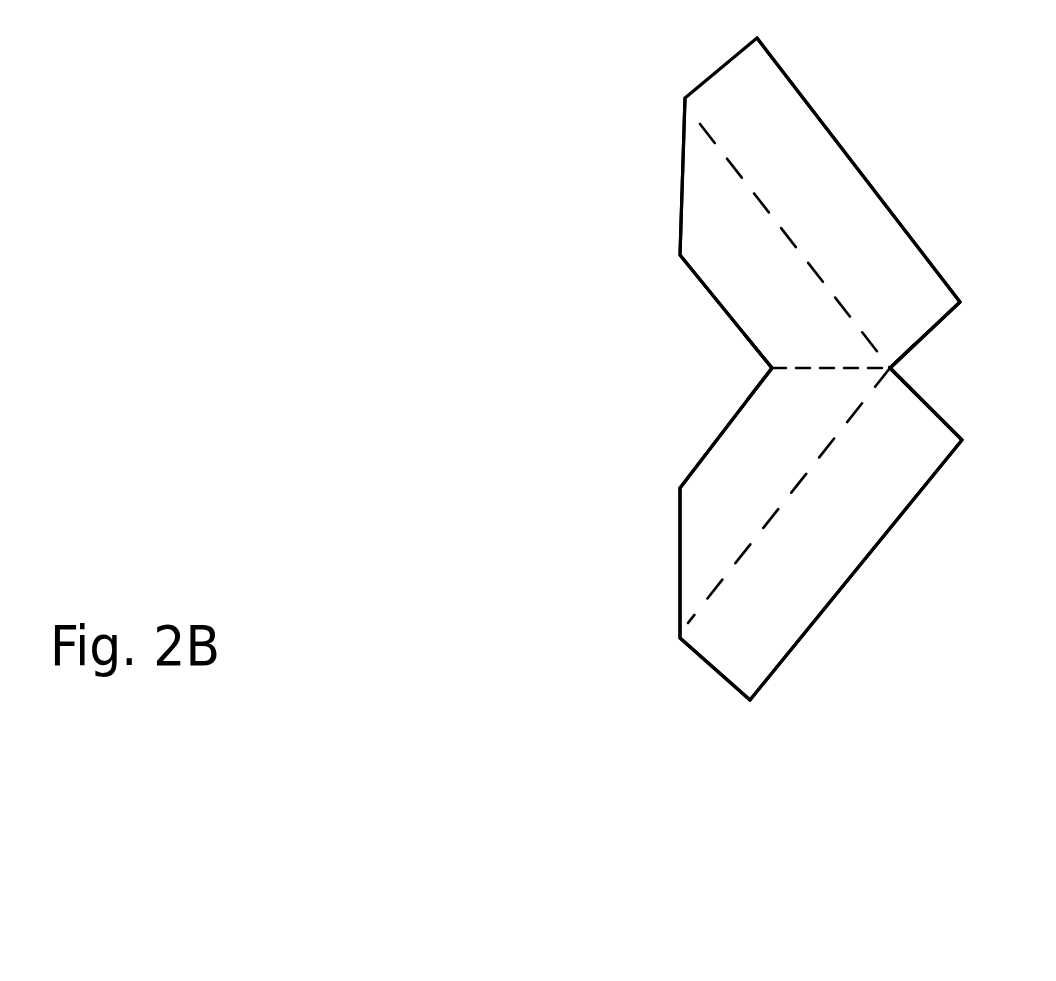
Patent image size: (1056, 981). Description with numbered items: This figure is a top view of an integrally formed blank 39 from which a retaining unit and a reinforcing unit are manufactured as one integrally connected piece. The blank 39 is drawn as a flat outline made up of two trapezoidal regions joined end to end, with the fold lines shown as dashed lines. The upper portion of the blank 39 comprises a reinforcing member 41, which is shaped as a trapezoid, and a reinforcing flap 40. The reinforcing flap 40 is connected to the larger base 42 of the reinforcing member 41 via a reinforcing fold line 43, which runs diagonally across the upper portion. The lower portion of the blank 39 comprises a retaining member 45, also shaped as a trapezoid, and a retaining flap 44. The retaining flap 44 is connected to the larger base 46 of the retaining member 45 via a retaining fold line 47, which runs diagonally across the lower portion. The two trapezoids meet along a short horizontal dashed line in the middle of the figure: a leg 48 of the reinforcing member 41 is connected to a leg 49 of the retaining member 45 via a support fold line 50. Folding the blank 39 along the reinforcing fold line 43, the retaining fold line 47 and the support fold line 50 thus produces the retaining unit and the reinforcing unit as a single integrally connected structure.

The integrally formed blank 39 is at (573, 217).
The reinforcing flap 40 is at (847, 193).
The reinforcing member 41 is at (725, 225).
The larger base 42 is at (827, 273).
The reinforcing fold line 43 is at (730, 163).
The retaining flap 44 is at (880, 482).
The retaining member 45 is at (735, 462).
The larger base 46 is at (775, 520).
The retaining fold line 47 is at (727, 565).
The leg 48 is at (895, 368).
The leg 49 is at (770, 368).
The support fold line 50 is at (794, 360).